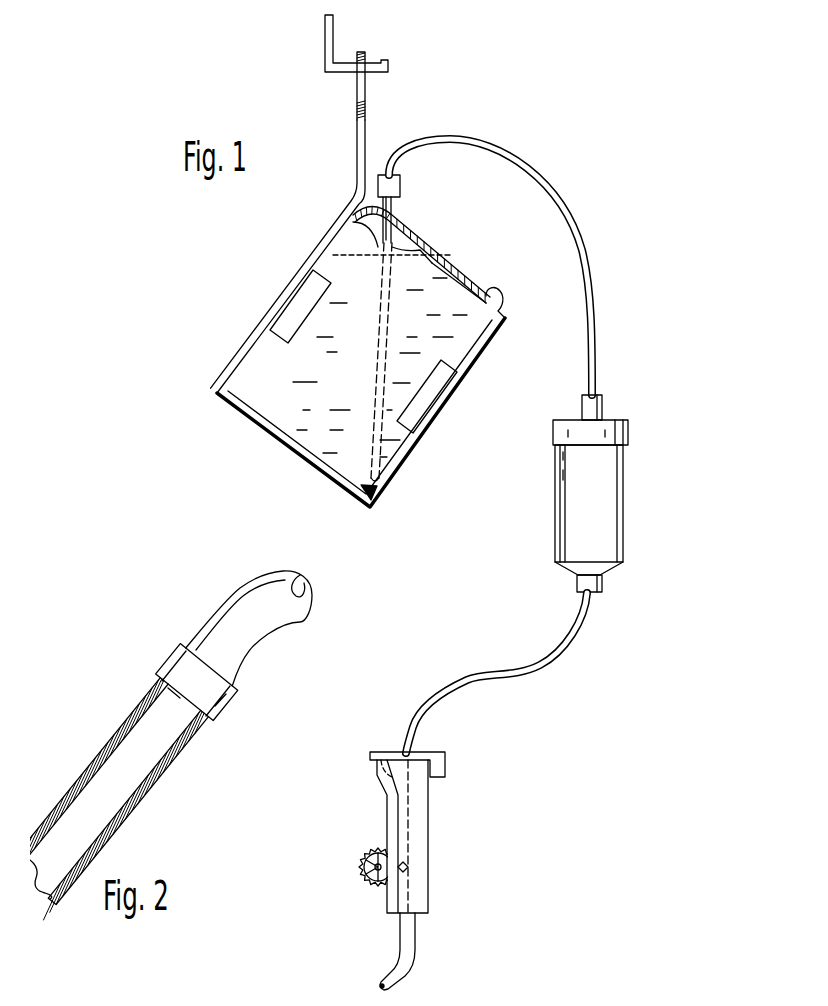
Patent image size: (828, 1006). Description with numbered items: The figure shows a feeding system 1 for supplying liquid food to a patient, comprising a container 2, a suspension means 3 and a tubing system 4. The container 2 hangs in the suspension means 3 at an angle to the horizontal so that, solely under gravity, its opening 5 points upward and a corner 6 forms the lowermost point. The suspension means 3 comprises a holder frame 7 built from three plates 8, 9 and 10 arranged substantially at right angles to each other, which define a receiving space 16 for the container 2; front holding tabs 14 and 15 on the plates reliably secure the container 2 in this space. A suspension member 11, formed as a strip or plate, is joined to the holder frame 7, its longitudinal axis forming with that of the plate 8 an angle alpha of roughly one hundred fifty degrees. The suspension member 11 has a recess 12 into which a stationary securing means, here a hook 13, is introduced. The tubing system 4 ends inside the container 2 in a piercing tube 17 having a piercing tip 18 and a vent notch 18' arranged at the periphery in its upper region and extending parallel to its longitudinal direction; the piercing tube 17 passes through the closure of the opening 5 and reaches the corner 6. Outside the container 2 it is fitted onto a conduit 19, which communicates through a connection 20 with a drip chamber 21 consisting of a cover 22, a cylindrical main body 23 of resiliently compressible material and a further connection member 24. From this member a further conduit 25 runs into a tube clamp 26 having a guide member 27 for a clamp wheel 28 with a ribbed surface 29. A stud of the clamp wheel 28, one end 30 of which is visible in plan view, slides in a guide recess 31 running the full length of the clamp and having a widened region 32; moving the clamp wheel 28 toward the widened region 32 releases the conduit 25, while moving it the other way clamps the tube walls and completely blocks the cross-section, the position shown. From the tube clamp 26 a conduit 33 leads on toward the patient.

In FIG. 1, the feeding system 1 is at (576, 209).
In FIG. 1, the container 2 is at (372, 377).
In FIG. 1, the suspension means 3 is at (312, 248).
In FIG. 1, the tubing system 4 is at (577, 356).
In FIG. 1, the opening 5 is at (394, 217).
In FIG. 1, the corner 6 is at (370, 508).
In FIG. 1, the holder frame 7 is at (268, 442).
In FIG. 1, the plate 8 is at (246, 350).
In FIG. 1, the plate 9 is at (241, 410).
In FIG. 1, the plate 10 is at (421, 447).
In FIG. 1, the suspension member 11 is at (357, 142).
In FIG. 1, the recess 12 is at (357, 89).
In FIG. 1, the hook 13 is at (325, 30).
In FIG. 1, the holding tab 14 is at (305, 295).
In FIG. 1, the holding tab 15 is at (433, 400).
In FIG. 1, the receiving space 16 is at (498, 297).
In FIG. 1, the piercing tube 17 is at (368, 452).
In FIG. 2, the piercing tube 17 is at (120, 823).
In FIG. 1, the piercing tip 18 is at (396, 503).
In FIG. 1, the vent notch 18' is at (413, 209).
In FIG. 2, the vent notch 18' is at (202, 646).
In FIG. 1, the conduit 19 is at (519, 158).
In FIG. 1, the connection 20 is at (582, 408).
In FIG. 1, the drip chamber 21 is at (559, 511).
In FIG. 1, the cover 22 is at (560, 434).
In FIG. 1, the cylindrical main body 23 is at (571, 518).
In FIG. 1, the connection member 24 is at (580, 585).
In FIG. 1, the conduit 25 is at (524, 663).
In FIG. 1, the tube clamp 26 is at (411, 871).
In FIG. 1, the guide member 27 is at (425, 845).
In FIG. 1, the clamp wheel 28 is at (372, 851).
In FIG. 1, the ribbed surface 29 is at (370, 868).
In FIG. 1, the end 30 is at (410, 867).
In FIG. 1, the tube channel 31 is at (412, 805).
In FIG. 1, the widened region 32 is at (392, 773).
In FIG. 1, the conduit 33 is at (392, 966).